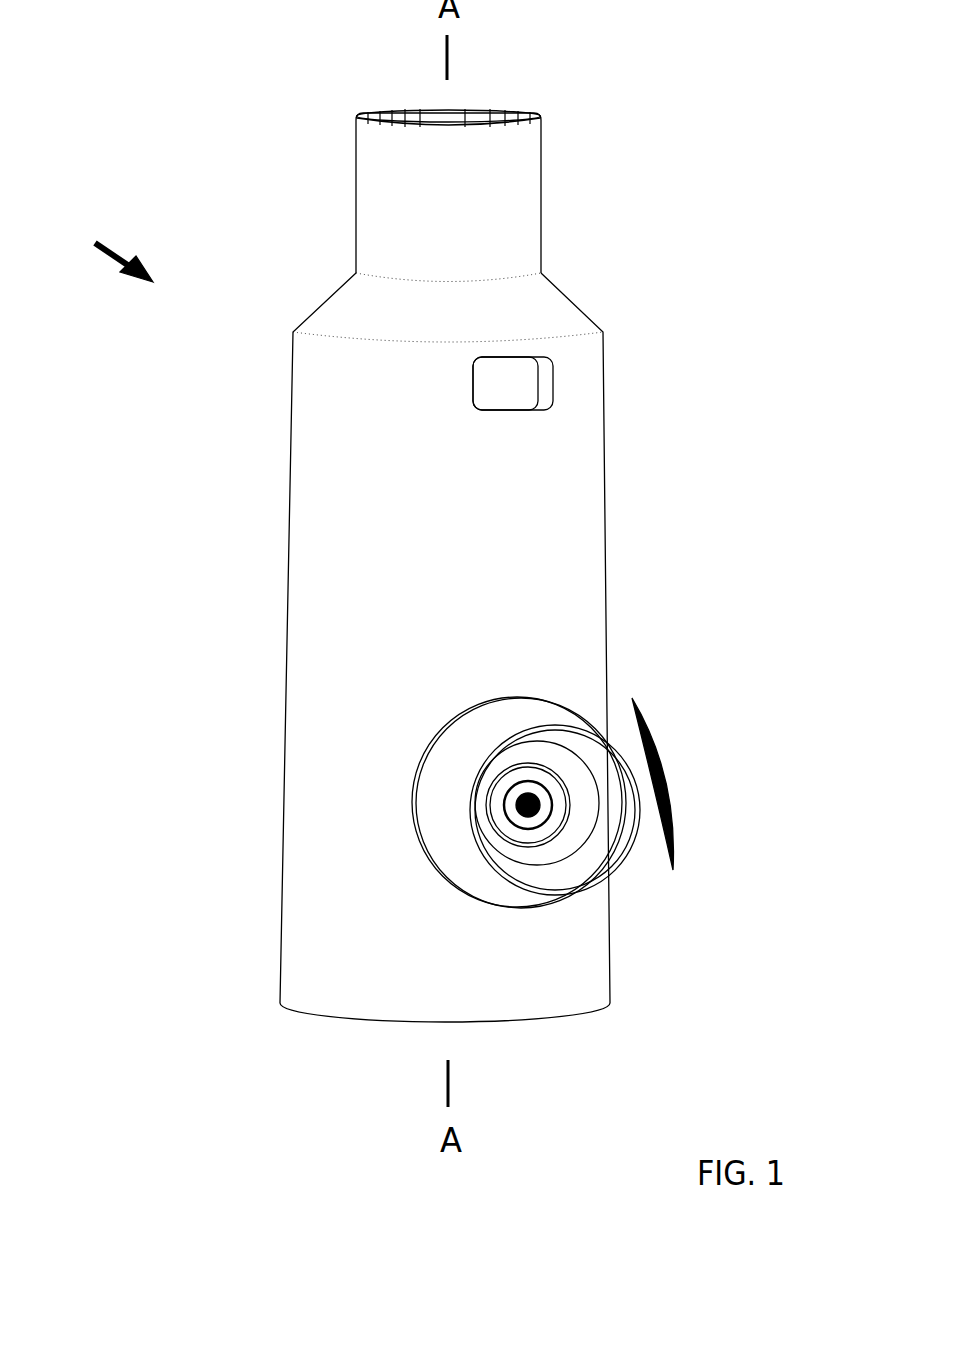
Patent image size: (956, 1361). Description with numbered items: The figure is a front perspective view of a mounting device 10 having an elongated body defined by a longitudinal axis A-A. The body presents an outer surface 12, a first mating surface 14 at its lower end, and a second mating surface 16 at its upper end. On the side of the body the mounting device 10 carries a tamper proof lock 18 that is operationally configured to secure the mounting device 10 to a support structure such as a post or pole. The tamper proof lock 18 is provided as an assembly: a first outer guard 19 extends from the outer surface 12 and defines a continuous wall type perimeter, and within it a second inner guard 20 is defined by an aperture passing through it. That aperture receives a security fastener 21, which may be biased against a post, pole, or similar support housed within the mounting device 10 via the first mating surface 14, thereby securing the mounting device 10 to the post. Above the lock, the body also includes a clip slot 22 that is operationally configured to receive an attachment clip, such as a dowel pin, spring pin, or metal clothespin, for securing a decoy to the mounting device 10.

The mounting device 10 is at (108, 246).
The outer surface 12 is at (327, 487).
The first mating surface 14 is at (328, 1017).
The second mating surface 16 is at (467, 117).
The tamper proof lock 18 is at (667, 772).
The first outer guard 19 is at (447, 790).
The second inner guard 20 is at (510, 842).
The security fastener 21 is at (535, 815).
The clip slot 22 is at (547, 373).